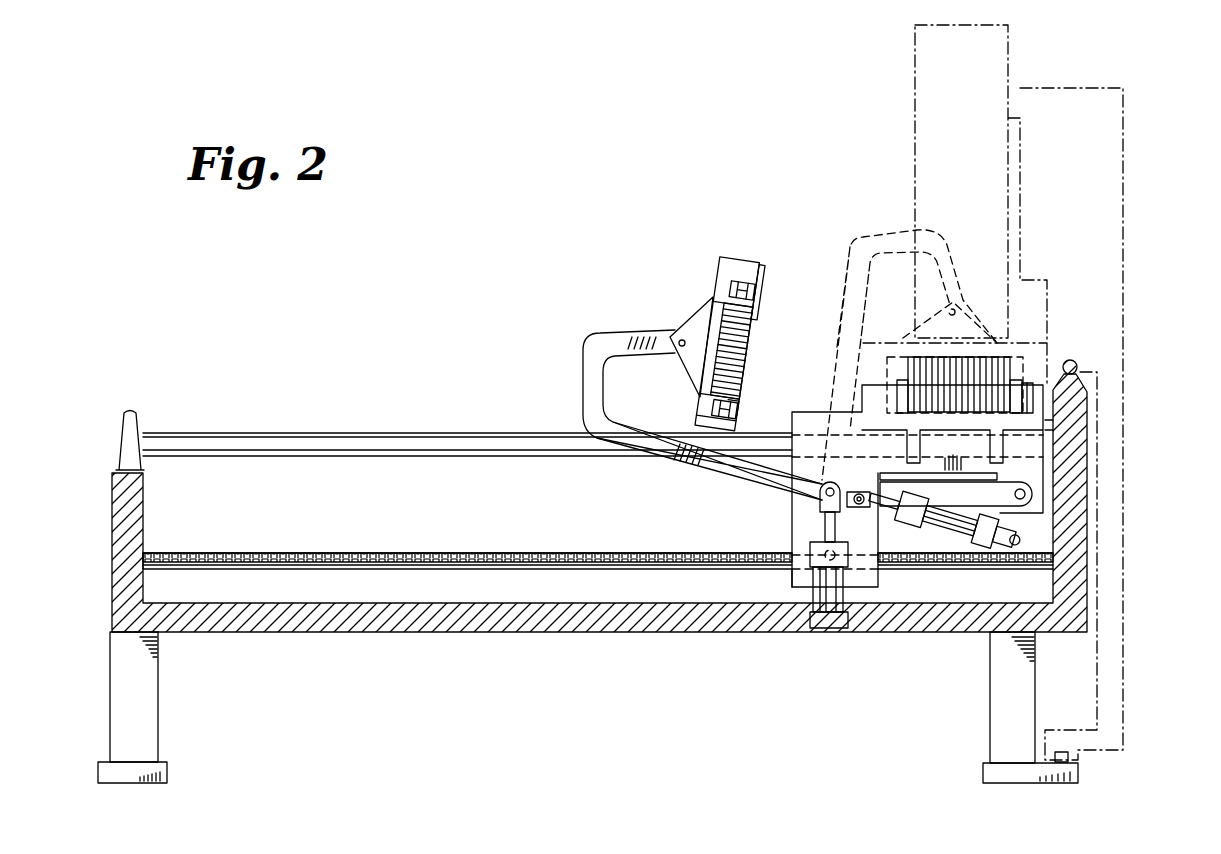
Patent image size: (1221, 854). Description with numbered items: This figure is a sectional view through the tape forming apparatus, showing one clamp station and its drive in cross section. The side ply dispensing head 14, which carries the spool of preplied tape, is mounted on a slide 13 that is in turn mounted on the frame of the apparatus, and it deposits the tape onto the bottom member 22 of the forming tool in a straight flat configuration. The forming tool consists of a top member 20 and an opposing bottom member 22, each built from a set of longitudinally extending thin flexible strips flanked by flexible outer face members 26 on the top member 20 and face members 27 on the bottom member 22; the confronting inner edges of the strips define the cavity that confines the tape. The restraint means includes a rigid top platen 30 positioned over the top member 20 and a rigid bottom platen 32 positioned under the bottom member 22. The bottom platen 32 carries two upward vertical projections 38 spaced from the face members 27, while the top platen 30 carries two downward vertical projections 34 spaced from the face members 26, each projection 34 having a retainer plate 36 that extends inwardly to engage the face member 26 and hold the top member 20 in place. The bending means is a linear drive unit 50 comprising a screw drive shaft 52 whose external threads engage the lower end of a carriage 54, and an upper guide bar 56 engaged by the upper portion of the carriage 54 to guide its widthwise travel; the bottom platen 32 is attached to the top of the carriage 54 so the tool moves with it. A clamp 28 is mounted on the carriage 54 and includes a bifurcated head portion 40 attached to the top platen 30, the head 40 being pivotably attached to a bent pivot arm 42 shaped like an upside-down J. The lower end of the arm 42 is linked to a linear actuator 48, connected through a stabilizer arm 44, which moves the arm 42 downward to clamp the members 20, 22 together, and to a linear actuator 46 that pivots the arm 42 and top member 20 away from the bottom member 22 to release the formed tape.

The slide 13 is at (1125, 483).
The side ply dispensing head 14 is at (925, 85).
The top member 20 is at (726, 314).
The bottom member 22 is at (923, 380).
The flexible outer face member 26 is at (735, 290).
The flexible outer face member 27 is at (1045, 424).
The clamp device 28 is at (740, 486).
The top platen 30 is at (727, 270).
The bottom platen 32 is at (849, 484).
The vertical projections 34 is at (722, 421).
The retainer plate 36 is at (745, 403).
The vertical projections 38 is at (872, 400).
The bifurcated head portion 40 is at (690, 362).
The bent pivot arm 42 is at (873, 240).
The stabilizer arm 44 is at (1030, 482).
The linear actuator 46 is at (950, 522).
The linear actuator 48 is at (828, 603).
The linear drive unit 50 is at (785, 583).
The screw drive shaft 52 is at (233, 553).
The carriage 54 is at (805, 518).
The upper guide bar 56 is at (253, 432).